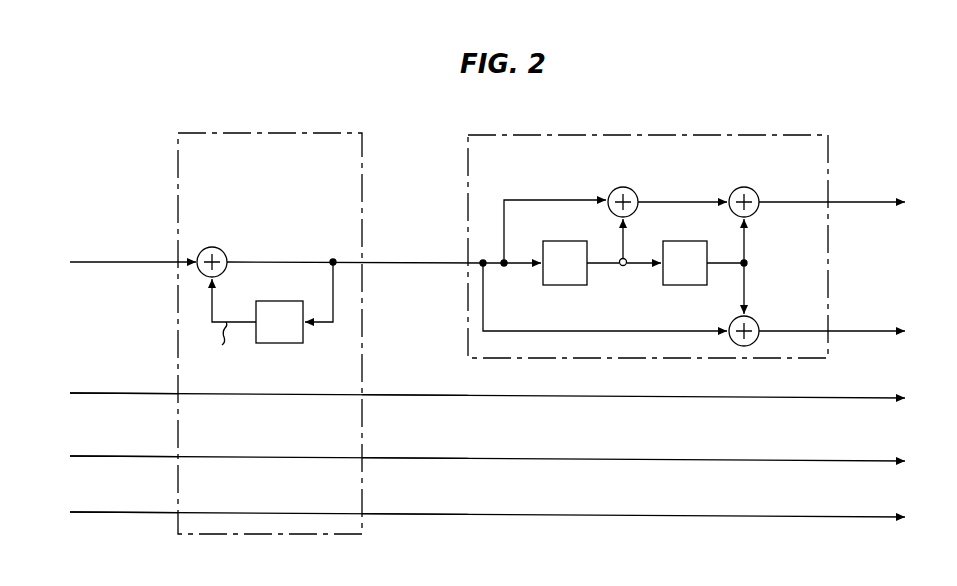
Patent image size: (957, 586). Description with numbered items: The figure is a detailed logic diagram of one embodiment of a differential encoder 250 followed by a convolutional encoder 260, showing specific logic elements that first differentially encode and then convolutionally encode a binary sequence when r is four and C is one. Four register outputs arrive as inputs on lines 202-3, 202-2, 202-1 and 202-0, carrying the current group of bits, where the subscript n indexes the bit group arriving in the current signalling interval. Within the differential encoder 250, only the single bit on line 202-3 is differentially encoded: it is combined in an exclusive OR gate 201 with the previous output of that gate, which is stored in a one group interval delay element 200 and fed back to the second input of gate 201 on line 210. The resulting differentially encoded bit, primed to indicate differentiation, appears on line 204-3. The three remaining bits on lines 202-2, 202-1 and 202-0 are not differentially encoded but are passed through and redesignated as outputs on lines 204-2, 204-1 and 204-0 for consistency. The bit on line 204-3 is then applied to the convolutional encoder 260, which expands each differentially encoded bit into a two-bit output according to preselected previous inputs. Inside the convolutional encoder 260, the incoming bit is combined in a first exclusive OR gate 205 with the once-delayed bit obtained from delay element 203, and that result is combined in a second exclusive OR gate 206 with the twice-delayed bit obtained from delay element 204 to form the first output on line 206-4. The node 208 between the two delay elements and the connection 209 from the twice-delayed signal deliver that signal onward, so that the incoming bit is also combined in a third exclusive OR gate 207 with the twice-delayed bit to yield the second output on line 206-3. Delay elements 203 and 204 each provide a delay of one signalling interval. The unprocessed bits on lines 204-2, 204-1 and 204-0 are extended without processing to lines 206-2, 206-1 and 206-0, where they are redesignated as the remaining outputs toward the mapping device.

The differential encoder 250 is at (257, 133).
The convolutional encoder 260 is at (640, 135).
The exclusive OR gate 201 is at (226, 255).
The line 210 is at (217, 297).
The one group interval delay element 200 is at (266, 343).
The input line 202-3 is at (150, 262).
The input line 202-2 is at (150, 393).
The input line 202-1 is at (150, 456).
The input line 202-0 is at (150, 512).
The output line 204-3 is at (462, 263).
The output line 204-2 is at (462, 395).
The output line 204-1 is at (462, 458).
The output line 204-0 is at (462, 514).
The delay element 203 is at (579, 241).
The delay element 204 is at (676, 241).
The first exclusive OR gate 205 is at (640, 199).
The second exclusive OR gate 206 is at (760, 199).
The third exclusive OR gate 207 is at (757, 340).
The node / lead between delay elements 208 is at (628, 256).
The lead to adder 207 209 is at (751, 295).
The output line 206-4 is at (856, 202).
The output line 206-3 is at (856, 331).
The output line 206-2 is at (856, 398).
The output line 206-1 is at (856, 461).
The output line 206-0 is at (856, 517).